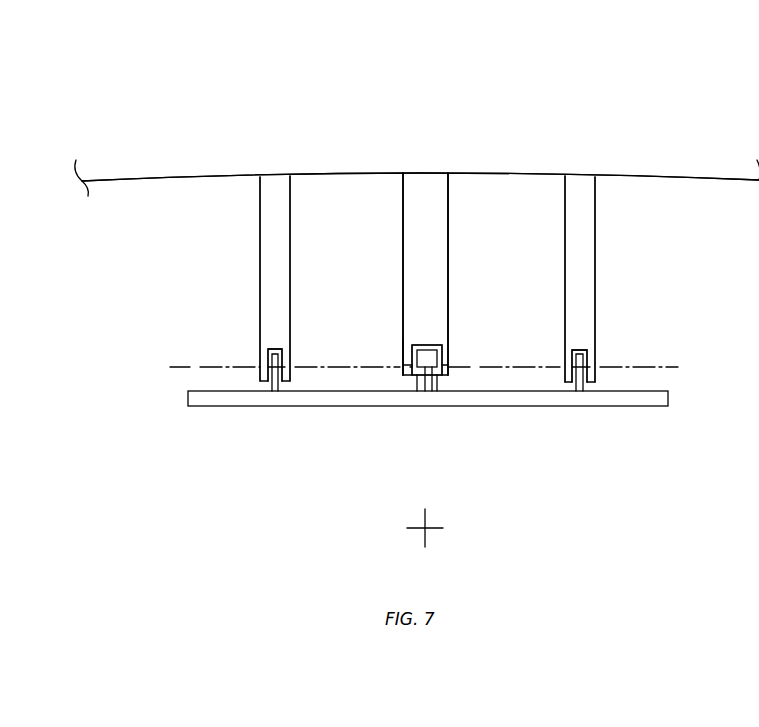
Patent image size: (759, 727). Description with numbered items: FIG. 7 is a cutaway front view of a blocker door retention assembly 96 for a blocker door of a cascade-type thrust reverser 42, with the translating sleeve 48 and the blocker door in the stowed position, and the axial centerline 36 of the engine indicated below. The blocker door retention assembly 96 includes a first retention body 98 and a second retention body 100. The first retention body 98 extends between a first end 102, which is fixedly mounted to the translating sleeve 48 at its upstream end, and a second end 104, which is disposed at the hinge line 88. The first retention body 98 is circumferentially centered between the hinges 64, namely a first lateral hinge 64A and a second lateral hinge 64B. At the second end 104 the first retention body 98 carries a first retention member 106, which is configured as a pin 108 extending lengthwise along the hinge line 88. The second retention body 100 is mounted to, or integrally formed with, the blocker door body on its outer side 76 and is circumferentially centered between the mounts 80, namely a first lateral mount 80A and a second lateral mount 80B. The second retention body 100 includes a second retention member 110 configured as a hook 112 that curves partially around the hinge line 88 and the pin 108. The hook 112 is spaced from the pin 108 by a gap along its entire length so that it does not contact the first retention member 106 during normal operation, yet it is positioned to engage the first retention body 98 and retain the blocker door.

The thrust reverser 42 is at (578, 95).
The translating sleeve 48 is at (212, 176).
The hinges 64 is at (427, 279).
The first lateral hinge 64A is at (585, 250).
The second lateral hinge 64B is at (272, 291).
The first retention body 98 is at (418, 271).
The first end 102 is at (420, 187).
The blocker door retention assembly 96 is at (478, 278).
The second end 104 is at (394, 378).
The outer side 76 is at (235, 390).
The hinge line 88 is at (178, 367).
The mounts 80 is at (427, 365).
The first lateral mount 80A is at (582, 385).
The second lateral mount 80B is at (274, 388).
The first retention member 106 is at (452, 358).
The second retention member 110 is at (408, 355).
The hook 112 is at (428, 355).
The pin 108 is at (424, 378).
The second retention body 100 is at (433, 380).
The axial centerline 36 is at (438, 525).